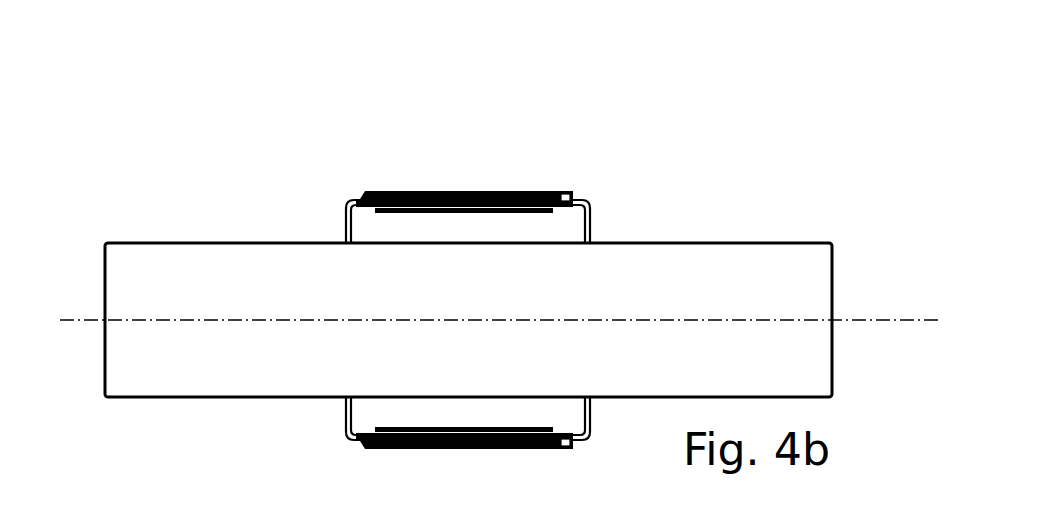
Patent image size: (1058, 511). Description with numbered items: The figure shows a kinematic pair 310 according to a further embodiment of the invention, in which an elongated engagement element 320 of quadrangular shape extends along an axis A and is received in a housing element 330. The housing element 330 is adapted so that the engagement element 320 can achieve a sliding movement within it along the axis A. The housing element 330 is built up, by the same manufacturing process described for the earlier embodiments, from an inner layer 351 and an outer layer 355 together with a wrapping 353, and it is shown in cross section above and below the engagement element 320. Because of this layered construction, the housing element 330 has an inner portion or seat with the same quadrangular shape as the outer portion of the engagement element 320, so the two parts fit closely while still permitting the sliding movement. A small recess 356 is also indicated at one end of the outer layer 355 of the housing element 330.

The electric machine / rotor assembly 310 is at (681, 141).
The engagement element 320 is at (710, 239).
The housing element 330 is at (362, 185).
The inner layer 351 is at (428, 235).
The wrapping 353 is at (552, 218).
The outer layer 355 is at (492, 193).
The recess / marking 356 is at (567, 193).
The rotation axis A is at (878, 320).